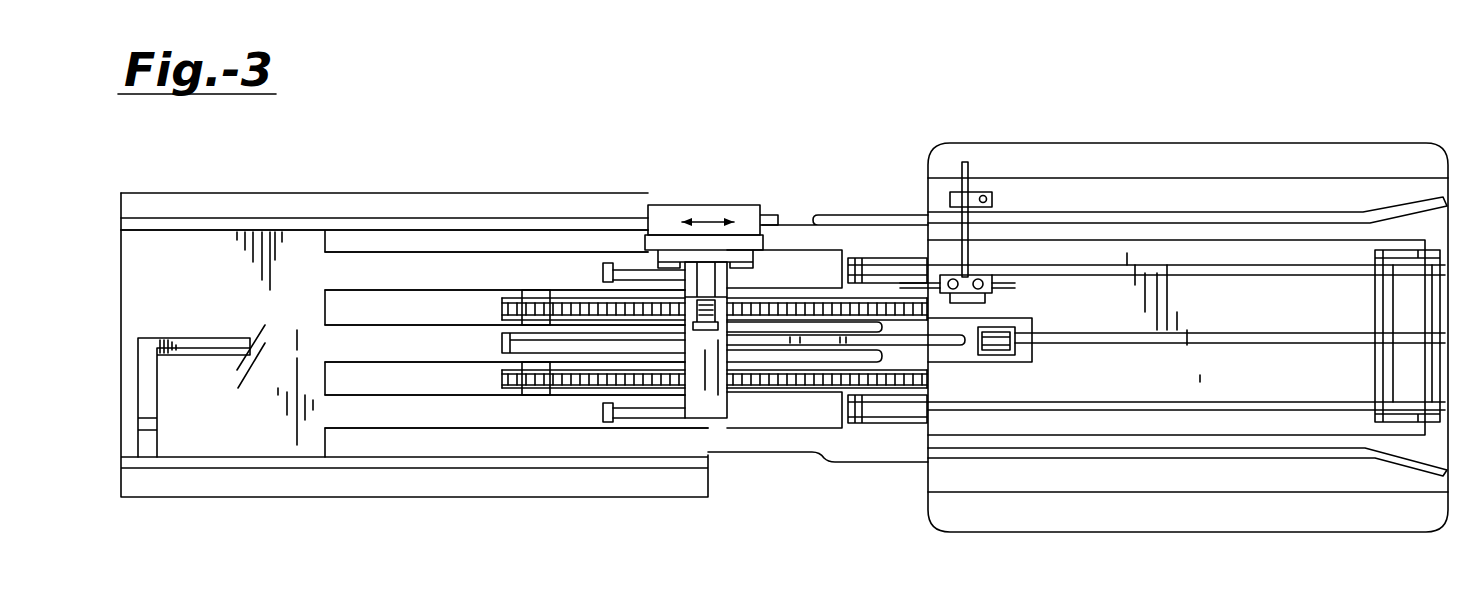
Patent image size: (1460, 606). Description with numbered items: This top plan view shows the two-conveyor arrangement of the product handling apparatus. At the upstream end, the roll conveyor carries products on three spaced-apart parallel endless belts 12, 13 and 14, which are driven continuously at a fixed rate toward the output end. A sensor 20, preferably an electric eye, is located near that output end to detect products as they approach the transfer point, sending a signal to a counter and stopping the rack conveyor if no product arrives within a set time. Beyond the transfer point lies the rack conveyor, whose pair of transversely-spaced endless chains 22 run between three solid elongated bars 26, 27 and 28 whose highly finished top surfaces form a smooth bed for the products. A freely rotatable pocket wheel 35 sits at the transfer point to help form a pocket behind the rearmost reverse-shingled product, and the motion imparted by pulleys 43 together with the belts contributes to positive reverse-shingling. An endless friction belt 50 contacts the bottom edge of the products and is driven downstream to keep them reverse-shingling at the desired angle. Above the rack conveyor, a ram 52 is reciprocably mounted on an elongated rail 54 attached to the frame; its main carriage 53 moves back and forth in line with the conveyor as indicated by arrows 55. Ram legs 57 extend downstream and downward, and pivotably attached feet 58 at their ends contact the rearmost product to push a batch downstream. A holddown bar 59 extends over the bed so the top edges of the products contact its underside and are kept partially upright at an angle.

The endless belt 12 is at (1195, 265).
The endless belt 13 is at (1225, 340).
The endless belt 14 is at (1240, 400).
The sensor 20 is at (983, 262).
The endless chains 22 is at (780, 298).
The elongated bar 26 is at (340, 410).
The elongated bar 27 is at (342, 338).
The elongated bar 28 is at (337, 270).
The pocket wheel 35 is at (963, 342).
The pulleys 43 is at (897, 258).
The endless belt 50 is at (507, 327).
The ram 52 is at (745, 201).
The main carriage 53 is at (762, 208).
The elongated bar or rail 54 is at (413, 218).
The arrows 55 is at (706, 215).
The ram legs 57 is at (632, 270).
The feet 58 is at (600, 270).
The holddown bar 59 is at (180, 340).